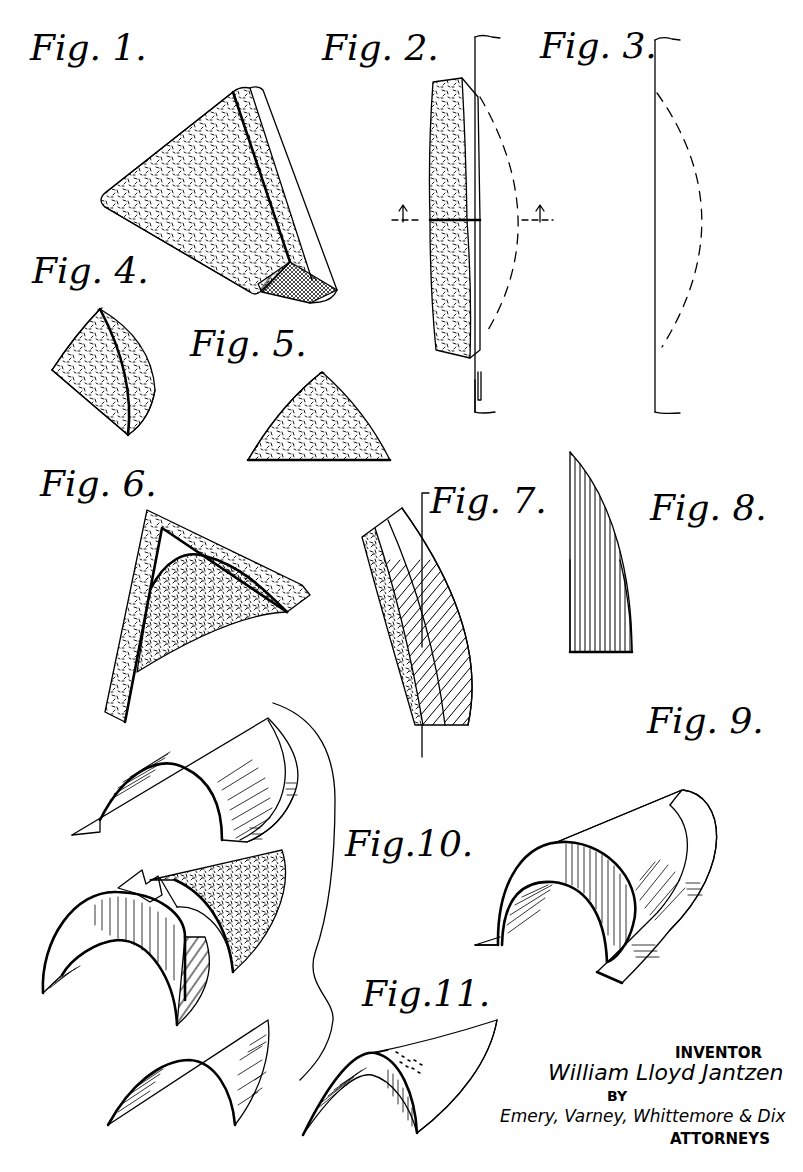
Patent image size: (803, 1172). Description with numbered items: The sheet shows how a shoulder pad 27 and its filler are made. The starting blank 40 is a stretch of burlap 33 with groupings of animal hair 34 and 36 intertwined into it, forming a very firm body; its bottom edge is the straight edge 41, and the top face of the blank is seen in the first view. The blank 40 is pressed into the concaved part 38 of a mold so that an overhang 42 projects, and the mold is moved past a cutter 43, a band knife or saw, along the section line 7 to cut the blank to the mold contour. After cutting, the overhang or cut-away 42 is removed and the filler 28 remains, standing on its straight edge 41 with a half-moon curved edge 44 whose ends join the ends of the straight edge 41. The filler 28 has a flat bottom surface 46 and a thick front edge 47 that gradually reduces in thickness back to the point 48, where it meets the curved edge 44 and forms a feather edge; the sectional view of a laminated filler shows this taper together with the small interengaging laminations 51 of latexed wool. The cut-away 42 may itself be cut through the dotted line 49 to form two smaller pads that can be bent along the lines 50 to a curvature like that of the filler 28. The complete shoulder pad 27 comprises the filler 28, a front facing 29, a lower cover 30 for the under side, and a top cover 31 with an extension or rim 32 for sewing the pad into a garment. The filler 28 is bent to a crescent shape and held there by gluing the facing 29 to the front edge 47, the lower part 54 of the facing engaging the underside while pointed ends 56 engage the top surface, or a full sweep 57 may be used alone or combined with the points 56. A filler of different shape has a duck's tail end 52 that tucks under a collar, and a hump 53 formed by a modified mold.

In FIG. 2, the section line 7— 7 is at (472, 202).
In FIG. 10, the shoulder pad 27 is at (662, 843).
In FIG. 2, the filler or padding 28 is at (436, 401).
In FIG. 3, the filler or padding 28 is at (703, 221).
In FIG. 5, the filler or padding 28 is at (377, 424).
In FIG. 9, the filler or padding 28 is at (260, 934).
In FIG. 11, the filler or padding 28 is at (442, 1100).
In FIG. 9, the front facing 29 is at (78, 915).
In FIG. 10, the front facing 29 is at (542, 855).
In FIG. 9, the lower cover 30 is at (130, 1098).
In FIG. 10, the lower cover 30 is at (537, 915).
In FIG. 9, the top cover 31 is at (212, 743).
In FIG. 10, the top cover 31 is at (682, 870).
In FIG. 9, the extension or rim 32 is at (278, 795).
In FIG. 10, the extension or rim 32 is at (683, 908).
In FIG. 1, the burlap 33 is at (325, 278).
In FIG. 7, the burlap 33 is at (380, 535).
In FIG. 1, the animal hair grouping 34 is at (220, 278).
In FIG. 7, the animal hair grouping 34 is at (400, 603).
In FIG. 1, the animal hair grouping 36 is at (300, 210).
In FIG. 7, the animal hair grouping 36 is at (466, 657).
In FIG. 2, the concaved part 38 is at (512, 167).
In FIG. 1, the blank 40 is at (212, 193).
In FIG. 1, the straight edge 41 is at (150, 143).
In FIG. 4, the straight edge 41 is at (83, 400).
In FIG. 5, the straight edge 41 is at (335, 466).
In FIG. 8, the straight edge 41 is at (572, 655).
In FIG. 2, the overhang or cut-away 42 is at (432, 88).
In FIG. 2, the cutter 43 is at (482, 390).
In FIG. 4, the curved edge 44 is at (80, 318).
In FIG. 5, the curved edge 44 is at (285, 397).
In FIG. 4, the bottom surface 46 is at (66, 338).
In FIG. 8, the bottom surface 46 is at (570, 555).
In FIG. 4, the thick front edge 47 is at (130, 435).
In FIG. 8, the thick front edge 47 is at (622, 655).
In FIG. 9, the thick front edge 47 is at (178, 862).
In FIG. 4, the point 48 is at (105, 312).
In FIG. 5, the point 48 is at (323, 373).
In FIG. 8, the point 48 is at (573, 453).
In FIG. 6, the dotted line 49 is at (207, 615).
In FIG. 6, the bend lines 50 is at (243, 570).
In FIG. 8, the interengaging laminations 51 is at (633, 622).
In FIG. 11, the duck's tail end 52 is at (486, 1042).
In FIG. 11, the hump 53 is at (380, 1053).
In FIG. 9, the lower part of the facing 54 is at (65, 977).
In FIG. 9, the pointed ends 56 is at (117, 886).
In FIG. 9, the full sweep 57 is at (215, 990).